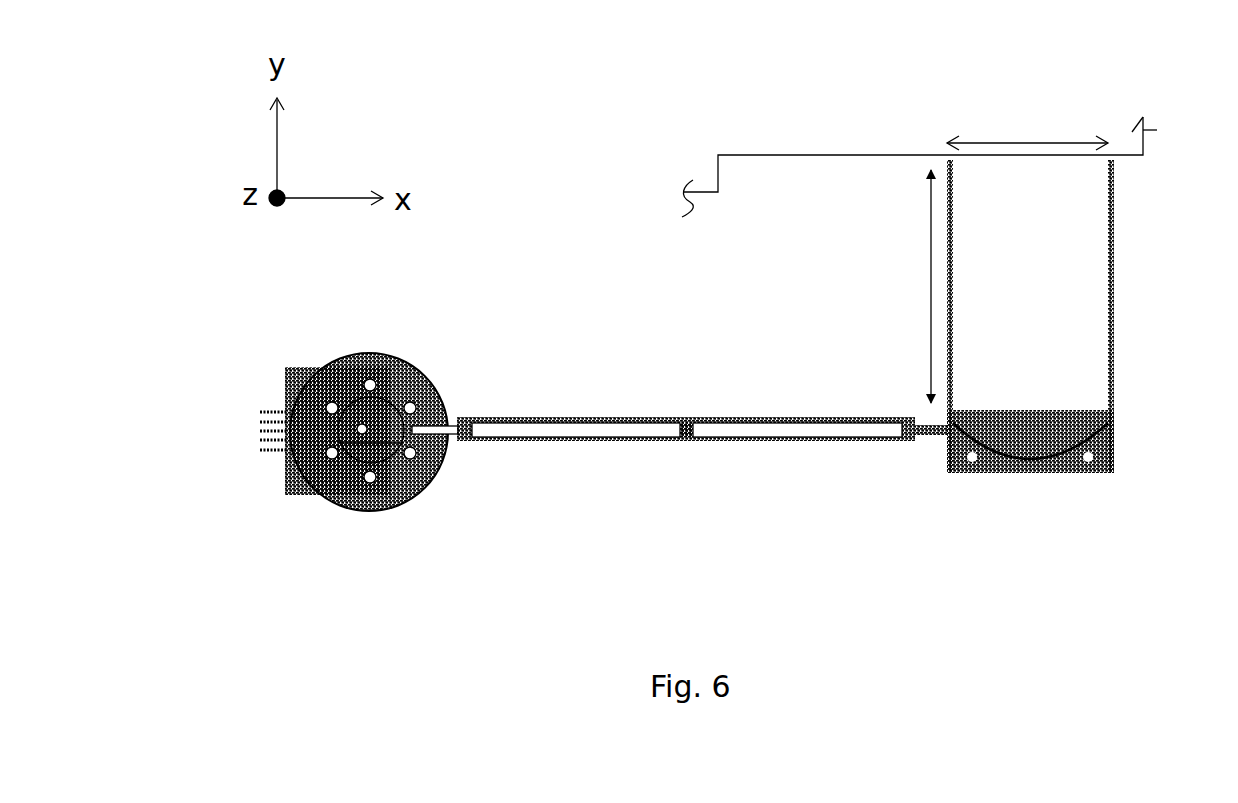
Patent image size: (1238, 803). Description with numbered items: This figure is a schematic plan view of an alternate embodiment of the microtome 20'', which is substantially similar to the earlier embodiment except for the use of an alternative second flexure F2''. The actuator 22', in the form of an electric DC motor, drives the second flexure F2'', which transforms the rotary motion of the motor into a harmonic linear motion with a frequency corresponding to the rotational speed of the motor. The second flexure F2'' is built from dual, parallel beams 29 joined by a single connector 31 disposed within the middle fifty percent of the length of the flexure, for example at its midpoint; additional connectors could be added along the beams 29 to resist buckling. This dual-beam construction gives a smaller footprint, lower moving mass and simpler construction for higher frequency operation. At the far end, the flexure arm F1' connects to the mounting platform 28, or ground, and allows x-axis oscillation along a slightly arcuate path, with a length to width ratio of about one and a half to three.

The microtome 20'' is at (740, 306).
The actuator 22' is at (359, 396).
The mounting platform 28 is at (837, 142).
The parallel beams 29 is at (580, 417).
The connector 31 is at (693, 428).
The flexure arm F1' is at (1175, 306).
The second flexure F2'' is at (677, 331).